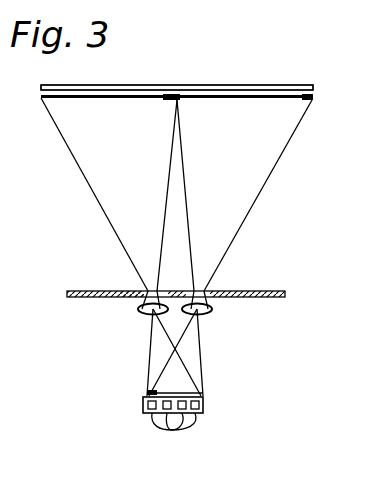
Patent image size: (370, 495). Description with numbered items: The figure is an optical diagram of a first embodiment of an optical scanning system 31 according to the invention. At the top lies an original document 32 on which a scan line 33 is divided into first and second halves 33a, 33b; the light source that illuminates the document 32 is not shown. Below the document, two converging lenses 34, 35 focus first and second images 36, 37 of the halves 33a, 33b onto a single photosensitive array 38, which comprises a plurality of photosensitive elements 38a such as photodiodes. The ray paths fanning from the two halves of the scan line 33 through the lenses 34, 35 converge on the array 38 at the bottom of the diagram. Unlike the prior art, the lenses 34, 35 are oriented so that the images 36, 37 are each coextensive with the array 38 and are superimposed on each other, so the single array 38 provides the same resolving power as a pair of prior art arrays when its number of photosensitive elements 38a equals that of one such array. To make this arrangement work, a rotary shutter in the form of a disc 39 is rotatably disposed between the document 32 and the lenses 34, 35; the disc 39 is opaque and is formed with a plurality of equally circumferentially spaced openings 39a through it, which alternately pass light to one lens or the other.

The optical scanning system 31 is at (178, 66).
The original document 32 is at (283, 88).
The scan line 33 is at (198, 136).
The first half of scan line 33a is at (113, 98).
The second half of scan line 33b is at (241, 98).
The converging lens 34 is at (138, 309).
The converging lens 35 is at (212, 310).
The first image 36 is at (180, 392).
The second image 37 is at (152, 392).
The photosensitive array 38 is at (203, 404).
The photosensitive elements 38a is at (173, 435).
The disc 39 is at (285, 294).
The openings 39a is at (138, 290).